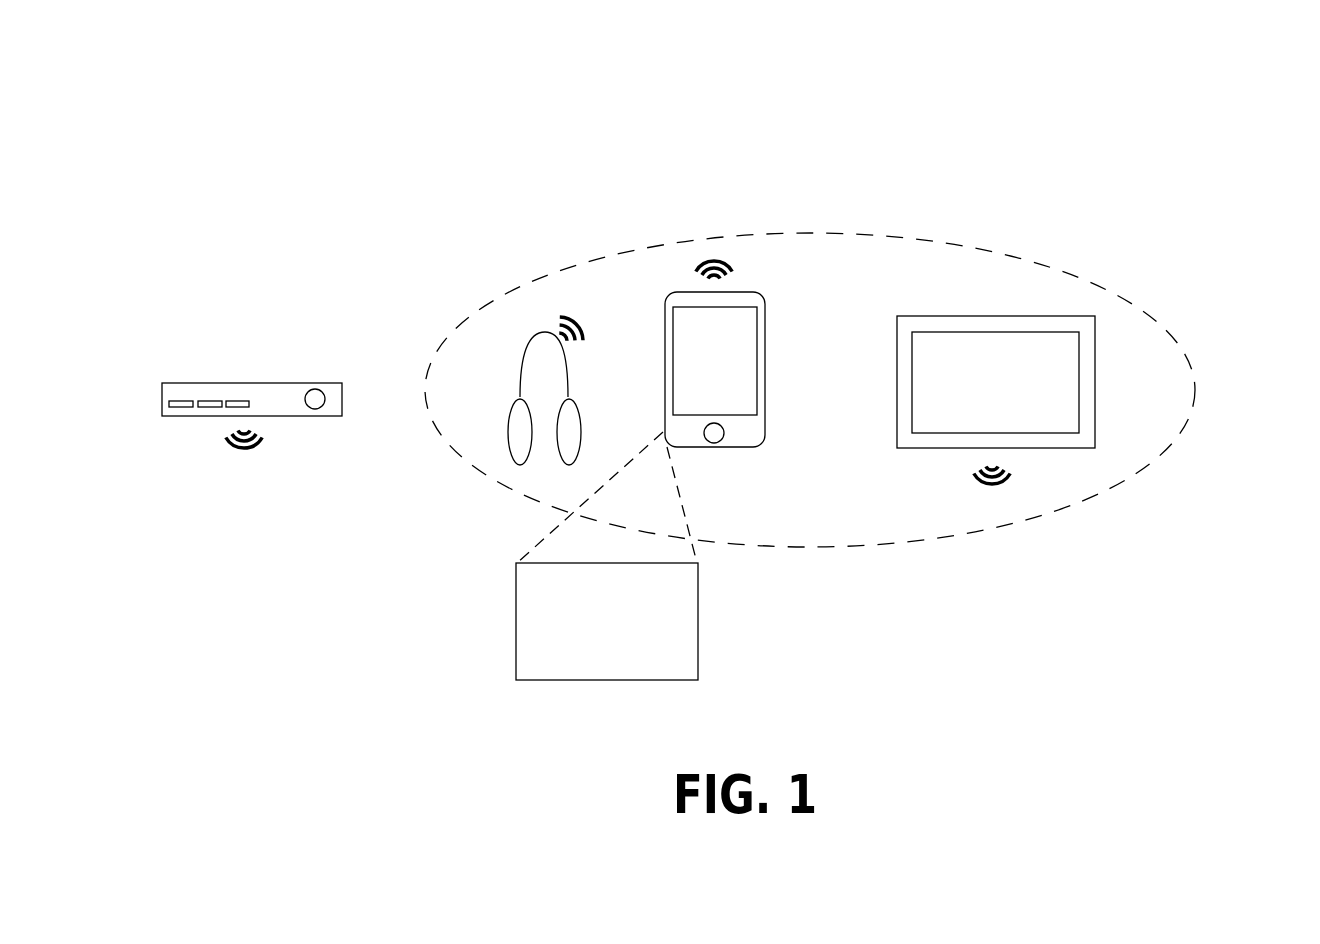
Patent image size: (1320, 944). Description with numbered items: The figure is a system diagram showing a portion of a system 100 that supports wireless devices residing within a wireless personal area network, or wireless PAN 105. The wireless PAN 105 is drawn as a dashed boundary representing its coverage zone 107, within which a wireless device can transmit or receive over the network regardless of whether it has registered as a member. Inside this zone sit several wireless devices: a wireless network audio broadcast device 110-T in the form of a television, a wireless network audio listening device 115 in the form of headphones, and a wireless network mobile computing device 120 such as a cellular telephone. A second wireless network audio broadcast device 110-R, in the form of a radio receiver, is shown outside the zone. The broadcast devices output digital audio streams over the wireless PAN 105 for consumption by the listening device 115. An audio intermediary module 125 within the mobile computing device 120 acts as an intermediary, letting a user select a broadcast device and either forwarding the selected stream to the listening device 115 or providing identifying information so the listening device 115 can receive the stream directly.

The system 100 is at (1130, 812).
The wireless personal area network (PAN) 105 is at (501, 100).
The coverage zone 107 is at (823, 233).
The wireless network audio broadcast device 110-R is at (247, 345).
The wireless network audio broadcast device 110-T is at (997, 280).
The wireless network audio listening device 115 is at (538, 295).
The wireless network mobile computing device 120 is at (716, 485).
The audio intermediary module 125 is at (607, 556).